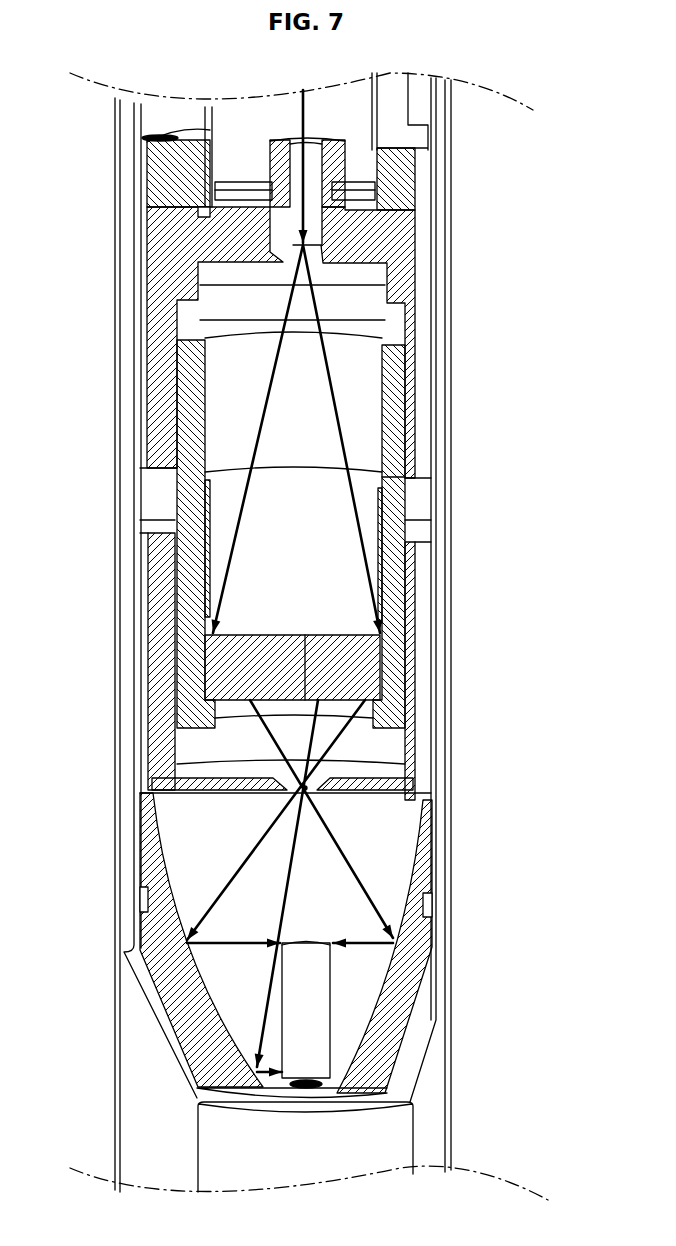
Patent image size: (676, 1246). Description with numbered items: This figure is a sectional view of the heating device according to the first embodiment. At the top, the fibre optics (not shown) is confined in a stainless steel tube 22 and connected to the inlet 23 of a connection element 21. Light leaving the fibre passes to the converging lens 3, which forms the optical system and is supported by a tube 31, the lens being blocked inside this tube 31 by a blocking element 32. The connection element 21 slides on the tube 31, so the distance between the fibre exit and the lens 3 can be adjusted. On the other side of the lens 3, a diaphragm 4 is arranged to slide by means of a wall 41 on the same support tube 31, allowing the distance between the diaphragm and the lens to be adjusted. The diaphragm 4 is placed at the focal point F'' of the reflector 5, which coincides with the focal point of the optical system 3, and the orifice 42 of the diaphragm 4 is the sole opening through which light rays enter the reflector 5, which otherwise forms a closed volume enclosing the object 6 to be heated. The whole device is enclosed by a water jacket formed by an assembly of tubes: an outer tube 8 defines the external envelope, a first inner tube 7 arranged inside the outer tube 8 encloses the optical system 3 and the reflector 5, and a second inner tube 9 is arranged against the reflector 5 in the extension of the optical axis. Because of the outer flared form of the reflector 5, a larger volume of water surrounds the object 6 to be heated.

The converging lens 3 is at (347, 670).
The diaphragm 4 is at (217, 800).
The reflector 5 is at (390, 873).
The object to be heated 6 is at (318, 1008).
The first inner tube 7 is at (440, 775).
The outer tube 8 is at (447, 303).
The second inner tube 9 is at (385, 1145).
The connection element 21 is at (395, 242).
The tube 22 is at (395, 104).
The inlet 23 is at (338, 163).
The tube 31 is at (393, 402).
The blocking element 32 is at (380, 568).
The wall 41 is at (410, 610).
The orifice 42 is at (280, 765).
The focal point F'' is at (433, 819).